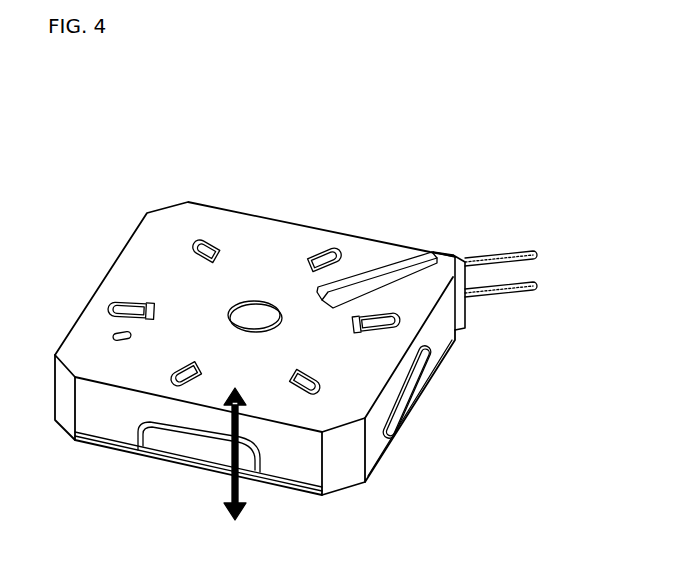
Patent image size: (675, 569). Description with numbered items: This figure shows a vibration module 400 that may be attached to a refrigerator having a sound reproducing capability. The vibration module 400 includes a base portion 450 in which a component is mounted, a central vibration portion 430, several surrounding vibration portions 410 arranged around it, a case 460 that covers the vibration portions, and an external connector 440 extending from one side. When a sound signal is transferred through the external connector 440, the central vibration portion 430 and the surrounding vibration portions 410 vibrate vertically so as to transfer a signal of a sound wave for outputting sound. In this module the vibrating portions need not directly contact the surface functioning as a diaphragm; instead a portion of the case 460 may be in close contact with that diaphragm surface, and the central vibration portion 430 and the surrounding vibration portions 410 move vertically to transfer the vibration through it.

The vibration module 400 is at (90, 89).
The surrounding vibration portions 410 is at (333, 250).
The central vibration portion 430 is at (245, 310).
The external connector 440 is at (515, 250).
The base portion 450 is at (199, 463).
The case 460 is at (278, 243).